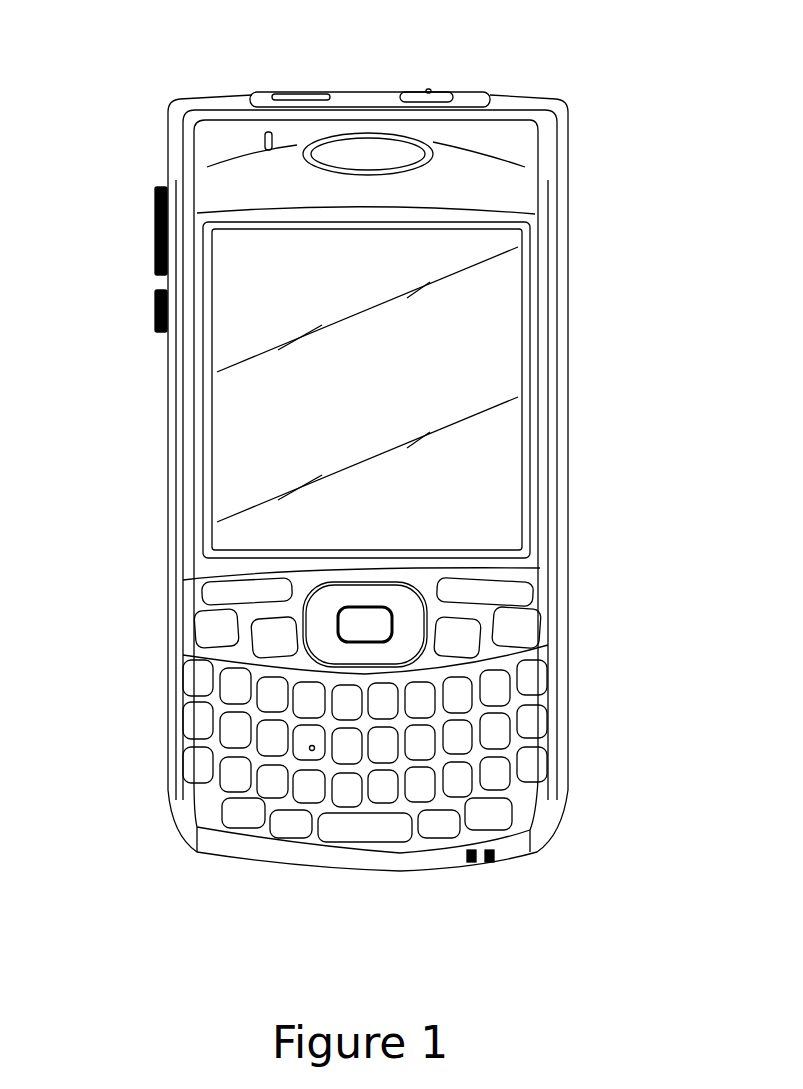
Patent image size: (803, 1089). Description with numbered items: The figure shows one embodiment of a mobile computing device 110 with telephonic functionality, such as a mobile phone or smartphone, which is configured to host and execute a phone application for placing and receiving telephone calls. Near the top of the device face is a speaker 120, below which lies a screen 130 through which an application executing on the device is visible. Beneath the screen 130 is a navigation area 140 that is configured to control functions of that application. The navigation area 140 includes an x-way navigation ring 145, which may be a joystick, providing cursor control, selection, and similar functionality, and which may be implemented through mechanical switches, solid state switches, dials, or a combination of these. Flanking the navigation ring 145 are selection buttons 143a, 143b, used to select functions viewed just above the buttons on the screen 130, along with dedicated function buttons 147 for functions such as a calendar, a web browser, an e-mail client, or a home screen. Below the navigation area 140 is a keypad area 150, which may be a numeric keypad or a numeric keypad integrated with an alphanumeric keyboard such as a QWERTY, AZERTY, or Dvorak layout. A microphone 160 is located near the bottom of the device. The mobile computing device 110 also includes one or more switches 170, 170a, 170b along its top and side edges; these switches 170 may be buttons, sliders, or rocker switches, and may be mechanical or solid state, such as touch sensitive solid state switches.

The mobile computing device 110 is at (570, 115).
The speaker 120 is at (362, 143).
The screen 130 is at (494, 352).
The navigation area 140 is at (394, 583).
The selection button 143a is at (215, 583).
The selection button 143b is at (503, 590).
The navigation ring 145 is at (403, 605).
The dedicated function buttons 147 is at (268, 640).
The keypad area 150 is at (575, 667).
The microphone 160 is at (487, 872).
The switch 170 is at (440, 88).
The switch 170a is at (150, 218).
The switch 170b is at (152, 312).